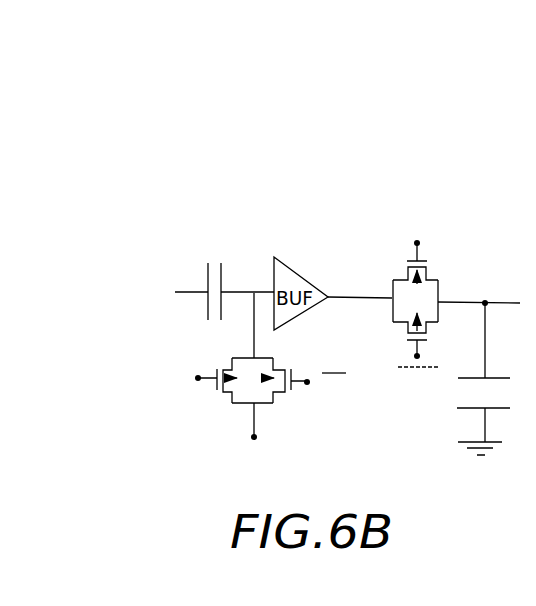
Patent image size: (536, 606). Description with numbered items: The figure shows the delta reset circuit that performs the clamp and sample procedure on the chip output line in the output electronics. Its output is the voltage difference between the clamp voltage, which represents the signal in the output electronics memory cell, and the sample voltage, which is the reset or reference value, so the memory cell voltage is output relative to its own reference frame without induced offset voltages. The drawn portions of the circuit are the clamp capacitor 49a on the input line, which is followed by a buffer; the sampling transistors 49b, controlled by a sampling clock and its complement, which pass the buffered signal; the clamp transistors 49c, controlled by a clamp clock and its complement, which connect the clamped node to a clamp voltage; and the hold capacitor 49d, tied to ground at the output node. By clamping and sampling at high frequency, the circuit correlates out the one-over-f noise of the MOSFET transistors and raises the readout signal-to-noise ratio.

The clamp capacitor C clamp 49a is at (228, 278).
The sampling transistors MSA and MSA1 49b is at (442, 272).
The clamp transistors MCL and MCL1 49c is at (223, 405).
The hold capacitor C HOLD 49d is at (455, 410).